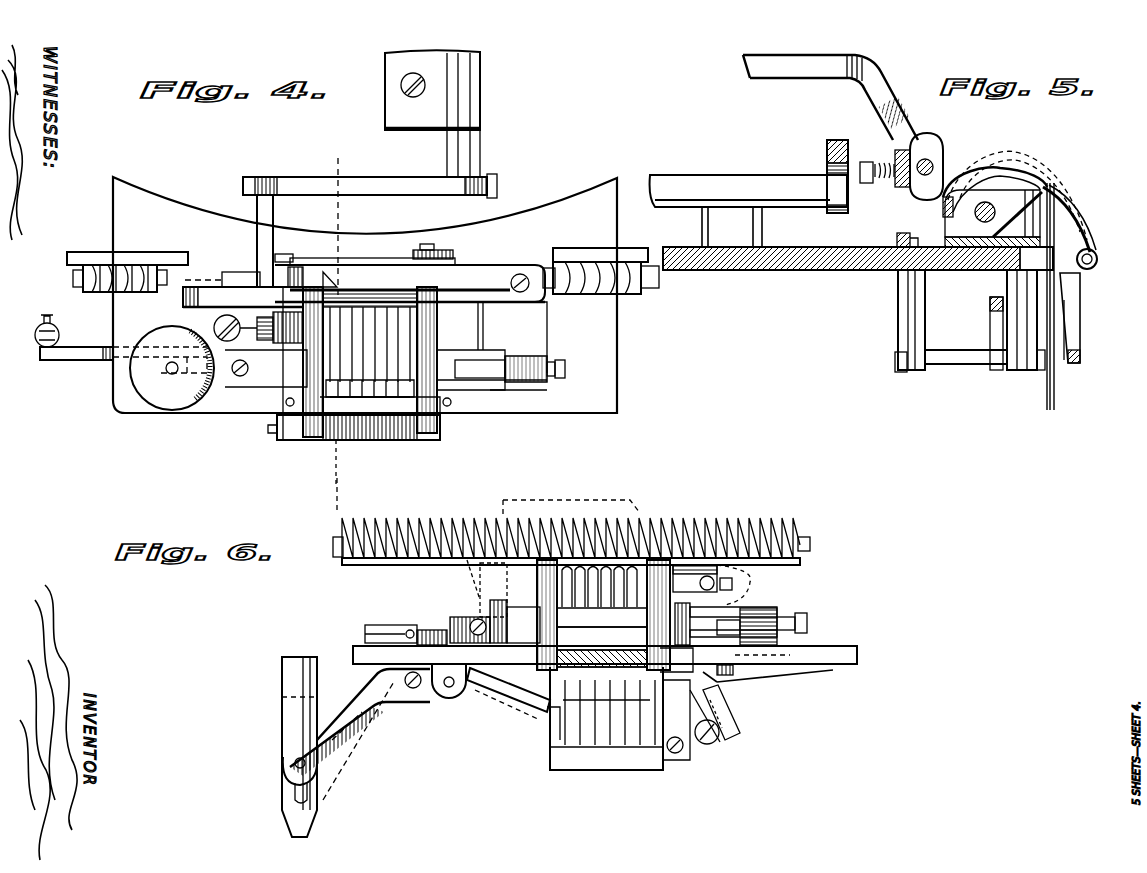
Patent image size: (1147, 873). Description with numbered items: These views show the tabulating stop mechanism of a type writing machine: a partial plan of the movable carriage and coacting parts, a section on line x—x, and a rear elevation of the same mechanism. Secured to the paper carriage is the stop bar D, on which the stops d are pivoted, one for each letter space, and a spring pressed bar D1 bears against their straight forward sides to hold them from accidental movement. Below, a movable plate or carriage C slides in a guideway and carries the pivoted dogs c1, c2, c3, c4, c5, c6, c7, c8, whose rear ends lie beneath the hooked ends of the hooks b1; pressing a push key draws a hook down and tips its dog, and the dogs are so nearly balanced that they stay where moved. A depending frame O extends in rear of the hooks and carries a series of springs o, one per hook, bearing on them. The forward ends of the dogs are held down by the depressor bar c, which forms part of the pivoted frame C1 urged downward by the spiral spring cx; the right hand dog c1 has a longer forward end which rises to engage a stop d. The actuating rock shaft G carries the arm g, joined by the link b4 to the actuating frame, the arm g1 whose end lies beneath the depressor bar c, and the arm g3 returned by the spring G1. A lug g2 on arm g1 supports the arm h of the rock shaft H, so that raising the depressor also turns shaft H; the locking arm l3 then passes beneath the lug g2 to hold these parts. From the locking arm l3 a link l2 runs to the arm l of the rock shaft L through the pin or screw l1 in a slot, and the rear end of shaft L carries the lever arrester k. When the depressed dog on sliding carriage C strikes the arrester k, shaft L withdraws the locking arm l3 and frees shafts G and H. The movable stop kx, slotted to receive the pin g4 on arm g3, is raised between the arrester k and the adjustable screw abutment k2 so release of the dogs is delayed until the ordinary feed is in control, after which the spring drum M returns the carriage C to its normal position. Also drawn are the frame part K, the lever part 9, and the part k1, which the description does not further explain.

In FIG. 4, the rock shaft H is at (480, 168).
In FIG. 5, the rock shaft H is at (810, 185).
In FIG. 6, the rock shaft H is at (720, 580).
In FIG. 4, the arm h is at (356, 185).
In FIG. 5, the arm h is at (840, 140).
In FIG. 6, the arm h is at (595, 520).
In FIG. 4, the stop bar D is at (72, 278).
In FIG. 5, the stop bar D is at (945, 160).
In FIG. 6, the stop bar D is at (580, 554).
In FIG. 4, the spring pressed bar D1 is at (95, 252).
In FIG. 5, the spring pressed bar D1 is at (897, 160).
In FIG. 4, the stop d is at (140, 265).
In FIG. 4, the shaft a is at (625, 274).
In FIG. 5, the shaft a is at (935, 148).
In FIG. 6, the shaft a is at (410, 518).
In FIG. 4, the arm of the rock shaft g is at (104, 360).
In FIG. 4, the arm g1 is at (231, 292).
In FIG. 6, the arm g1 is at (472, 570).
In FIG. 4, the lug g2 is at (258, 207).
In FIG. 6, the arm g3 is at (492, 706).
In FIG. 6, the pin or screw g4 is at (712, 740).
In FIG. 6, the bent lever 9 is at (345, 728).
In FIG. 4, the hook b1 is at (386, 402).
In FIG. 5, the hook b1 is at (1060, 383).
In FIG. 6, the hook b1 is at (630, 575).
In FIG. 4, the link b4 is at (35, 331).
In FIG. 4, the arm l is at (455, 256).
In FIG. 5, the arm l is at (900, 326).
In FIG. 4, the pin or screw l1 is at (433, 246).
In FIG. 5, the pin or screw l1 is at (925, 230).
In FIG. 4, the link l2 is at (357, 256).
In FIG. 5, the link l2 is at (905, 243).
In FIG. 4, the locking arm l3 is at (295, 254).
In FIG. 4, the depressor bar c is at (498, 280).
In FIG. 4, the dog c1 is at (331, 344).
In FIG. 4, the dog c2 is at (345, 344).
In FIG. 4, the dog c3 is at (356, 344).
In FIG. 4, the dog c4 is at (368, 344).
In FIG. 4, the dog c5 is at (379, 344).
In FIG. 4, the dog c6 is at (391, 344).
In FIG. 4, the dog c7 is at (402, 344).
In FIG. 4, the dog c8 is at (410, 344).
In FIG. 4, the spiral spring cx is at (347, 462).
In FIG. 5, the spiral spring cx is at (1098, 262).
In FIG. 6, the spiral spring cx is at (547, 710).
In FIG. 4, the movable plate or carriage C is at (411, 319).
In FIG. 5, the movable plate or carriage C is at (945, 205).
In FIG. 6, the movable plate or carriage C is at (515, 621).
In FIG. 4, the pivoted frame C1 is at (307, 372).
In FIG. 5, the pivoted frame C1 is at (1022, 172).
In FIG. 6, the pivoted frame C1 is at (668, 580).
In FIG. 4, the spring o is at (400, 412).
In FIG. 5, the spring o is at (1072, 321).
In FIG. 6, the spring o is at (618, 735).
In FIG. 5, the depending frame O is at (1075, 293).
In FIG. 6, the depending frame O is at (563, 762).
In FIG. 5, the lever arrester k is at (1040, 218).
In FIG. 6, the lever arrester k is at (693, 628).
In FIG. 6, the clamp link k1 is at (745, 668).
In FIG. 4, the abutment k2 is at (470, 370).
In FIG. 6, the abutment k2 is at (807, 618).
In FIG. 6, the movable stop kx is at (723, 722).
In FIG. 4, the clamp frame K is at (450, 367).
In FIG. 5, the clamp frame K is at (1028, 340).
In FIG. 5, the rock shaft L is at (970, 366).
In FIG. 4, the spring drum M is at (163, 368).
In FIG. 6, the spring drum M is at (398, 630).
In FIG. 6, the rock shaft G is at (448, 690).
In FIG. 6, the spring G1 is at (730, 695).
In FIG. 4, the section line x is at (331, 215).
In FIG. 6, the section line x is at (332, 495).